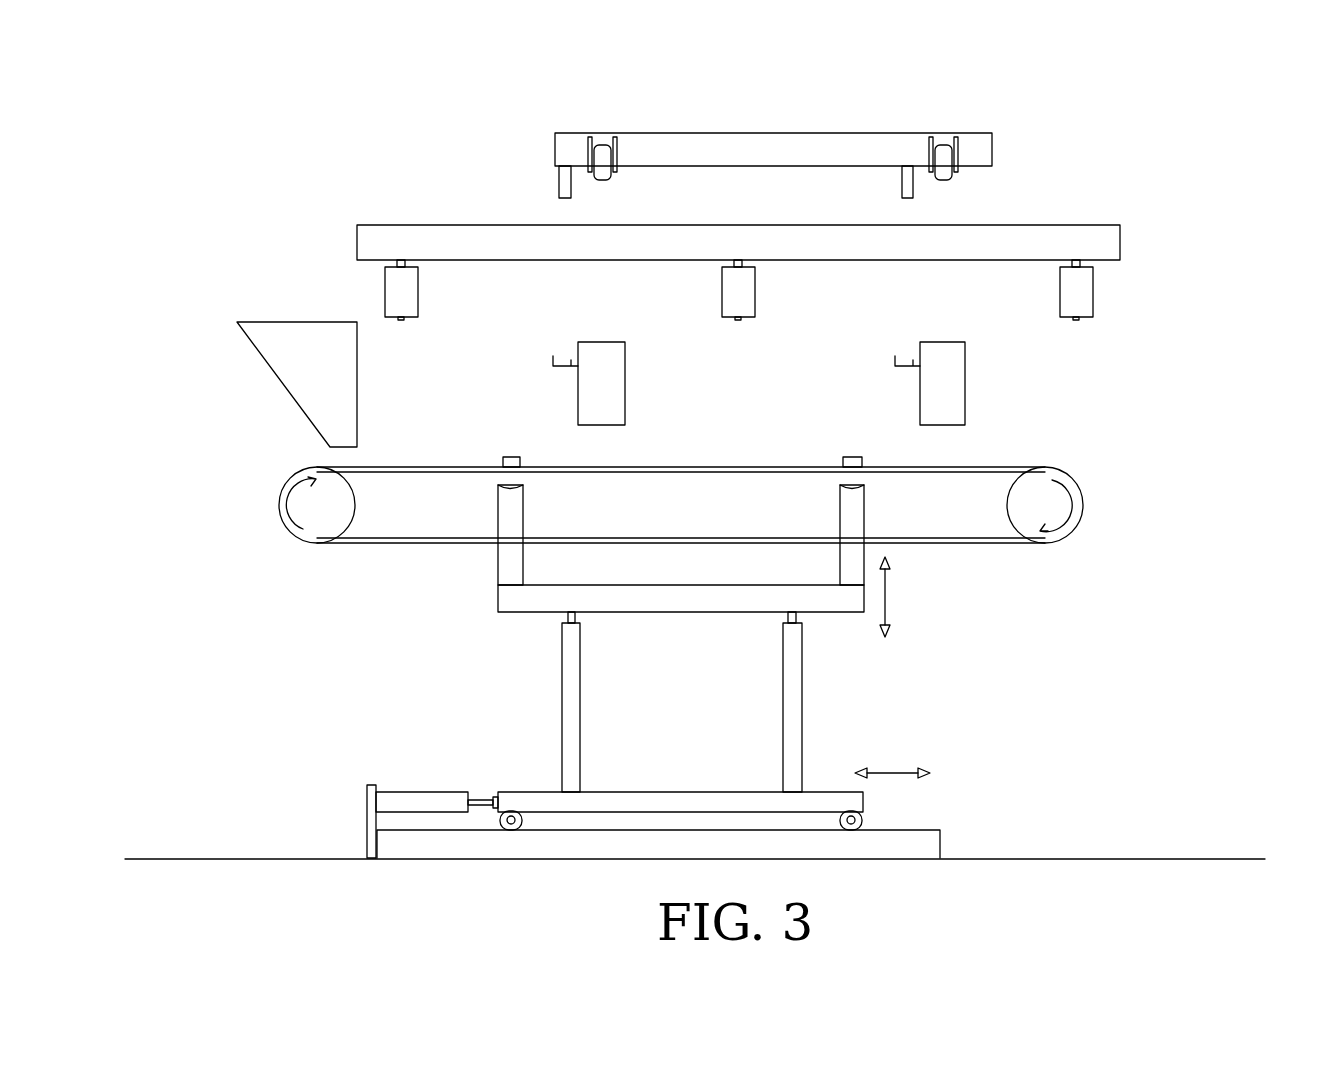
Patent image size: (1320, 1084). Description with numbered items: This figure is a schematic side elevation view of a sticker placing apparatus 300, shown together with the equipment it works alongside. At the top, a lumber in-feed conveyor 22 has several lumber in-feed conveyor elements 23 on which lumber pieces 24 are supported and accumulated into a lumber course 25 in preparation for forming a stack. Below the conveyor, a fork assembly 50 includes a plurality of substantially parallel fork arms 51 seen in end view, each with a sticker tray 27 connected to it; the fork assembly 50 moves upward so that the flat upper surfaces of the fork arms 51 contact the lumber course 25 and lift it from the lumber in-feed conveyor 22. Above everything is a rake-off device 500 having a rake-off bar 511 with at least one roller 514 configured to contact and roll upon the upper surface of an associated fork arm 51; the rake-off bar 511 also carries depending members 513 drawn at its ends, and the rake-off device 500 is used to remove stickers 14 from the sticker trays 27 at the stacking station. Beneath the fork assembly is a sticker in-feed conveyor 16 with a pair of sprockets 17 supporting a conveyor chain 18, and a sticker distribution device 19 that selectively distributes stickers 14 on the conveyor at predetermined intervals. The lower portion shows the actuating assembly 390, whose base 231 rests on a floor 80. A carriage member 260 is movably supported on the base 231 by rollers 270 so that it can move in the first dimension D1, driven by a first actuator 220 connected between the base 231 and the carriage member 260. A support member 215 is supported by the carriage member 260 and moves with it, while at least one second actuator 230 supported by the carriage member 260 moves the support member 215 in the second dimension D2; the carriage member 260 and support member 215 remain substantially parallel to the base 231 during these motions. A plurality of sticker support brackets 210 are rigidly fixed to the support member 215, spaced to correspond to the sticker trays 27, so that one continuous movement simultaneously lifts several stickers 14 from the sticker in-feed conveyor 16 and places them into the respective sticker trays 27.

The apparatus 300 is at (242, 148).
The rake-off device 500 is at (980, 120).
The rake-off bar 511 is at (793, 140).
The mounting tab 513 is at (560, 186).
The roller 514 is at (605, 172).
The lumber course 25 is at (1110, 212).
The lumber pieces 24 is at (448, 228).
The lumber in-feed conveyor 22 is at (1130, 303).
The lumber in-feed conveyor elements 23 is at (388, 289).
The sticker distribution device 19 is at (293, 387).
The fork assembly 50 is at (985, 368).
The fork arms 51 is at (618, 400).
The sticker tray 27 is at (555, 358).
The sticker in-feed conveyor 16 is at (1103, 490).
The sprockets 17 is at (282, 502).
The conveyor chain 18 is at (407, 466).
The stickers 14 is at (504, 457).
The actuating assembly 390 is at (870, 700).
The sticker support brackets 210 is at (523, 566).
The support member 215 is at (663, 602).
The second actuator 230 is at (563, 692).
The carriage member 260 is at (682, 800).
The rollers 270 is at (862, 825).
The first actuator 220 is at (432, 800).
The base 231 is at (443, 862).
The floor 80 is at (1041, 857).
The first dimension D1 is at (888, 772).
The second dimension D2 is at (888, 598).